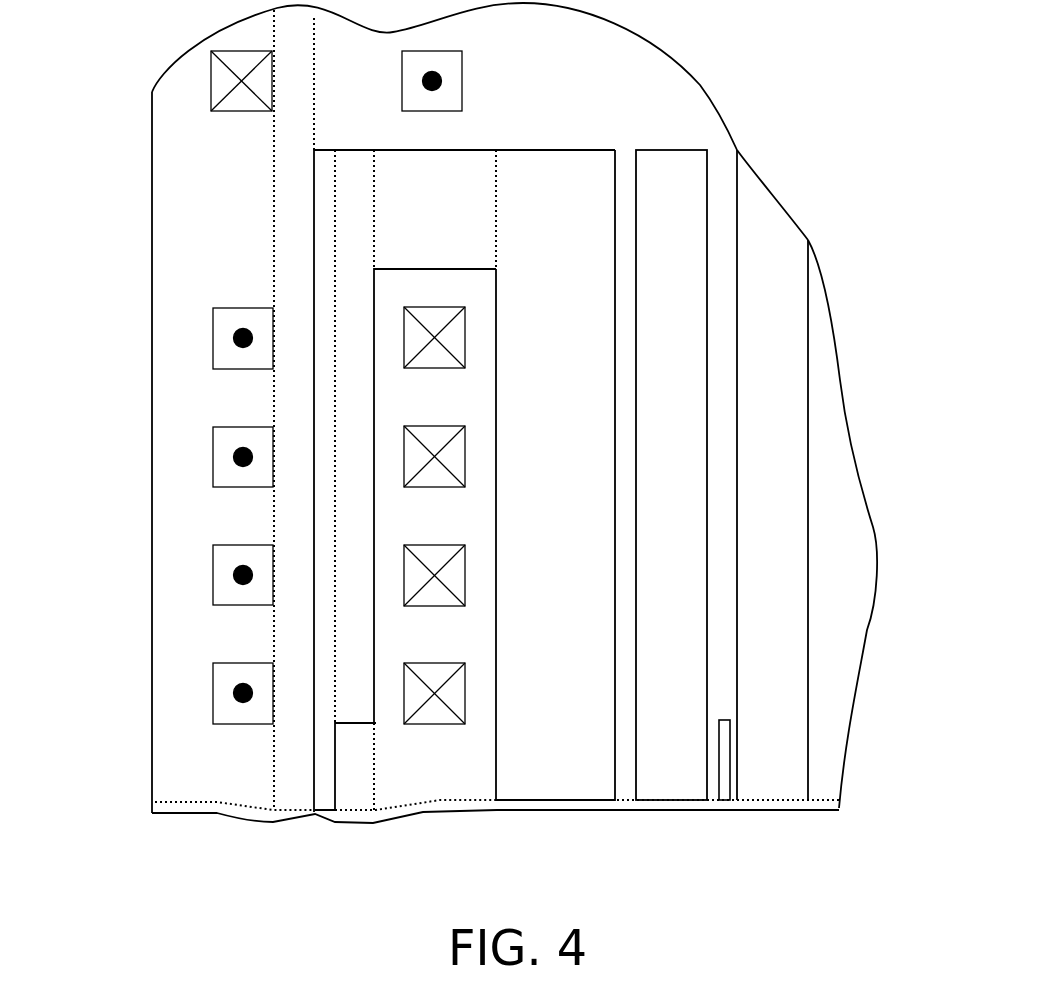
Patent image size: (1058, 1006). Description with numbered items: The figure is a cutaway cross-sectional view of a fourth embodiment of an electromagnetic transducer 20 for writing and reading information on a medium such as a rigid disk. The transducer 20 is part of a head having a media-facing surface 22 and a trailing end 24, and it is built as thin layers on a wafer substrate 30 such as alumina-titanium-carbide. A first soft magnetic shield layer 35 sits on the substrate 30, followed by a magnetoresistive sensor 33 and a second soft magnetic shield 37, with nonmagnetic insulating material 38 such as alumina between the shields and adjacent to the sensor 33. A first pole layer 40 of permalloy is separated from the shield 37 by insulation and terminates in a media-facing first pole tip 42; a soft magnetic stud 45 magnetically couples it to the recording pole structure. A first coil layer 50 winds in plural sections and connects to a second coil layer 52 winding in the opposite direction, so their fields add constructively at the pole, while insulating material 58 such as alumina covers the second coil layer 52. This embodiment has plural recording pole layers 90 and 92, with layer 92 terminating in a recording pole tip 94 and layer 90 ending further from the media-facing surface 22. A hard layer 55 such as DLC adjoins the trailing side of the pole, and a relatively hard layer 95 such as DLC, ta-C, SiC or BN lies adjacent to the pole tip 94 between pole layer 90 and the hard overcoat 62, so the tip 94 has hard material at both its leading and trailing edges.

The electromagnetic transducer 20 is at (116, 105).
The media-facing surface 22 is at (820, 828).
The trailing end 24 is at (138, 605).
The wafer substrate 30 is at (848, 581).
The magnetoresistive sensor 33 is at (728, 720).
The first shield layer 35 is at (788, 497).
The second soft magnetic shield 37 is at (688, 497).
The insulating material 38 is at (730, 187).
The first pole layer 40 is at (559, 502).
The first pole tip 42 is at (537, 820).
The soft magnetic stud 45 is at (438, 226).
The first coil layer 50 is at (465, 347).
The second coil layer 52 is at (212, 338).
The hard layer 55 is at (273, 760).
The insulating material 58 is at (219, 539).
The overcoat 62 is at (642, 811).
The recording pole layer 90 is at (365, 633).
The recording pole layer 92 is at (313, 632).
The recording pole tip 94 is at (326, 830).
The hard layer 95 is at (373, 763).